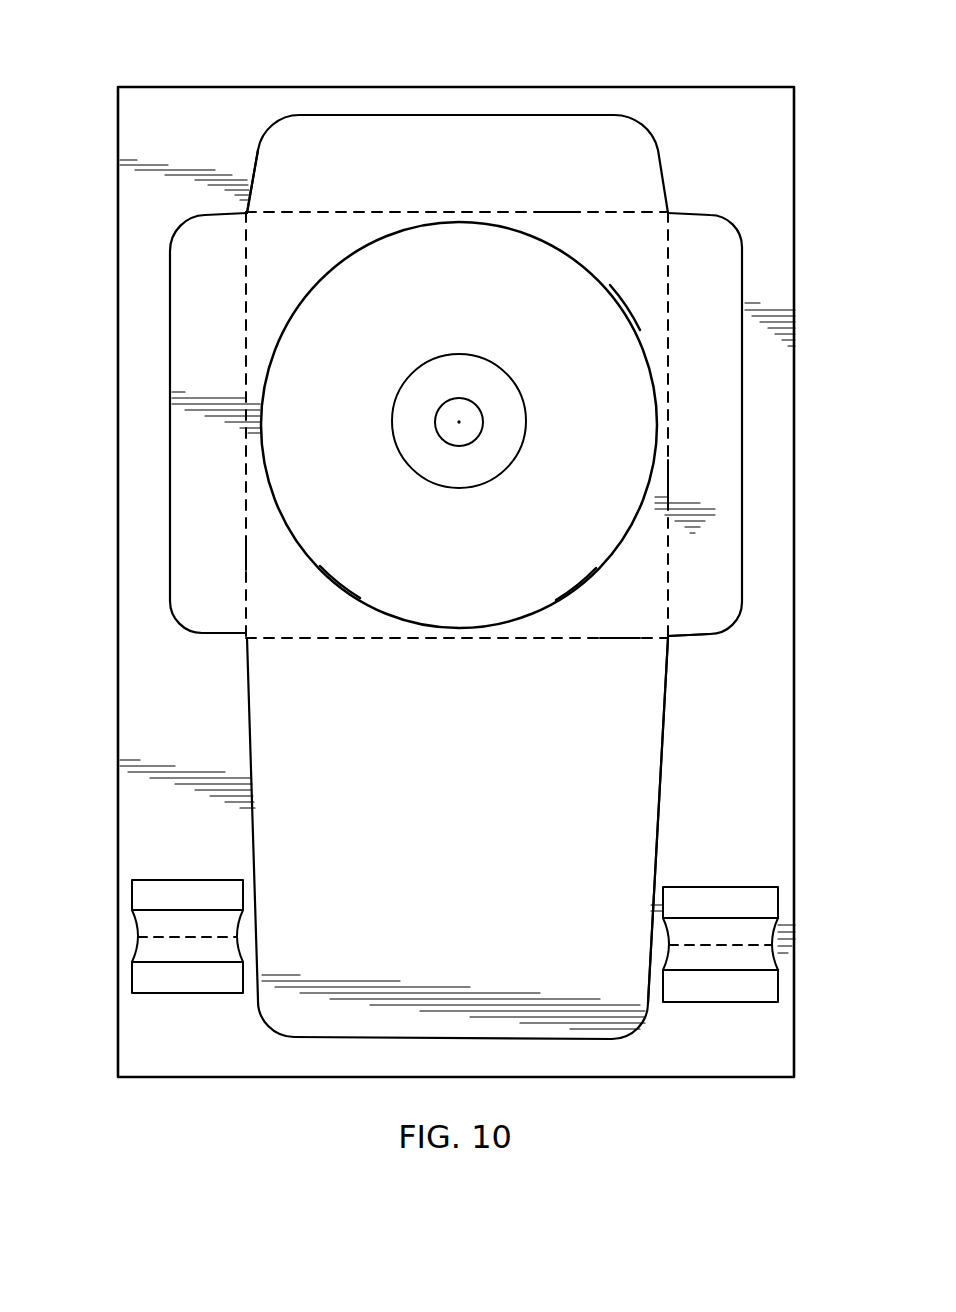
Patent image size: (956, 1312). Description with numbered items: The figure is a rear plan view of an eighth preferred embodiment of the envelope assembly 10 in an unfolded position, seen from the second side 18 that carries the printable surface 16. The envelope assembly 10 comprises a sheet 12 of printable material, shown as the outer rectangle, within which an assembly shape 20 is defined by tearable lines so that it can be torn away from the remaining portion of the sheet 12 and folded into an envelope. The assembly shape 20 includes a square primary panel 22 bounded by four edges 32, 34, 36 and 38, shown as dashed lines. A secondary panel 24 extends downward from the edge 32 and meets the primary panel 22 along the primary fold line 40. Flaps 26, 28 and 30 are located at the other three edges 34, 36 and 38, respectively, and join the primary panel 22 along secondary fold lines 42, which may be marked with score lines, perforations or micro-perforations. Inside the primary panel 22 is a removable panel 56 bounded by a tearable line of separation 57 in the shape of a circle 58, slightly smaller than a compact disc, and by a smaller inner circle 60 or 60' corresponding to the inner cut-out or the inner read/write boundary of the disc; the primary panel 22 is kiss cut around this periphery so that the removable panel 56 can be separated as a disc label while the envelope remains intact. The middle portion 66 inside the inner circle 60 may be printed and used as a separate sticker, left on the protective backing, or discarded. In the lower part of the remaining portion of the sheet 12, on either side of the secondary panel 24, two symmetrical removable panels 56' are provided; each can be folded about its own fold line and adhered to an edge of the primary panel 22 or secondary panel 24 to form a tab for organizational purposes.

The envelope assembly 10 is at (596, 75).
The sheet 12 is at (247, 105).
The printable surface 16 is at (638, 227).
The second side 18 is at (436, 783).
The assembly shape 20 is at (670, 150).
The primary panel 22 is at (655, 612).
The secondary panel 24 is at (637, 754).
The flap 26 is at (725, 541).
The flap 28 is at (185, 572).
The flap 30 is at (288, 152).
The edge 32 is at (278, 640).
The edge 34 is at (670, 428).
The edge 36 is at (413, 210).
The edge 38 is at (246, 597).
The primary fold line 40 is at (622, 648).
The secondary fold lines 42 is at (561, 208).
The removable panel 56 is at (459, 425).
The removable panel 56' is at (455, 914).
The tearable line of separation 57 is at (340, 586).
The circle 58 is at (636, 302).
The circle 60 is at (421, 402).
The circle 60' is at (430, 421).
The middle portion 66 is at (470, 438).